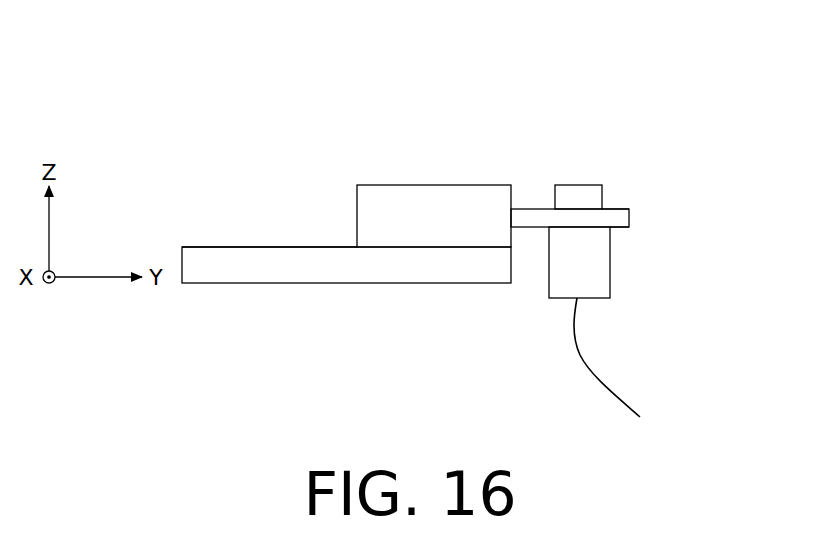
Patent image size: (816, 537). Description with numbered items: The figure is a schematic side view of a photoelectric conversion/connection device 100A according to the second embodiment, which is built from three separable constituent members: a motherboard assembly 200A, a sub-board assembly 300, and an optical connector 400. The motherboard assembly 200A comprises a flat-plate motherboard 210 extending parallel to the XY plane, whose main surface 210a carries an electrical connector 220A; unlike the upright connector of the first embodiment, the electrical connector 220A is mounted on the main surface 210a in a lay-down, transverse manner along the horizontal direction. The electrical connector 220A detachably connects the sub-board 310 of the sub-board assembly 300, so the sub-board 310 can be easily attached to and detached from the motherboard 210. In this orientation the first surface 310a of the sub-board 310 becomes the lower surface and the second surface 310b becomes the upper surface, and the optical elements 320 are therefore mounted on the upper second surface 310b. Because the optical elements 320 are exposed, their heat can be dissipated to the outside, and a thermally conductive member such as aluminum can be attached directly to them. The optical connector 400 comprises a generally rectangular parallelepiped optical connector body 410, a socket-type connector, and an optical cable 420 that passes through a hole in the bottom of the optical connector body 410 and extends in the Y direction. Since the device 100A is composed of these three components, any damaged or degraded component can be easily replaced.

The photoelectric conversion/connection device 100A is at (514, 112).
The motherboard assembly 200A is at (180, 241).
The motherboard 210 is at (243, 287).
The main surface 210a is at (228, 246).
The electrical connector 220A is at (357, 220).
The sub-board assembly 300 is at (535, 187).
The sub-board 310 is at (631, 218).
The first surface 310a is at (622, 228).
The second surface 310b is at (622, 208).
The optical element 320 is at (605, 182).
The optical connector 400 is at (620, 265).
The optical connector body 410 is at (612, 288).
The optical cable 420 is at (582, 366).